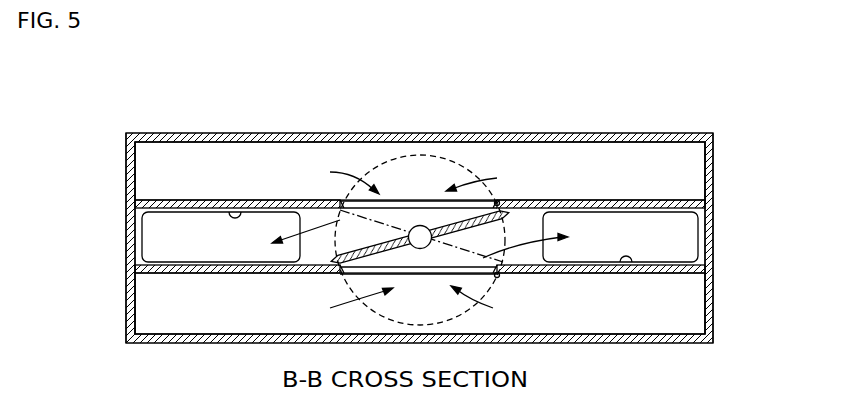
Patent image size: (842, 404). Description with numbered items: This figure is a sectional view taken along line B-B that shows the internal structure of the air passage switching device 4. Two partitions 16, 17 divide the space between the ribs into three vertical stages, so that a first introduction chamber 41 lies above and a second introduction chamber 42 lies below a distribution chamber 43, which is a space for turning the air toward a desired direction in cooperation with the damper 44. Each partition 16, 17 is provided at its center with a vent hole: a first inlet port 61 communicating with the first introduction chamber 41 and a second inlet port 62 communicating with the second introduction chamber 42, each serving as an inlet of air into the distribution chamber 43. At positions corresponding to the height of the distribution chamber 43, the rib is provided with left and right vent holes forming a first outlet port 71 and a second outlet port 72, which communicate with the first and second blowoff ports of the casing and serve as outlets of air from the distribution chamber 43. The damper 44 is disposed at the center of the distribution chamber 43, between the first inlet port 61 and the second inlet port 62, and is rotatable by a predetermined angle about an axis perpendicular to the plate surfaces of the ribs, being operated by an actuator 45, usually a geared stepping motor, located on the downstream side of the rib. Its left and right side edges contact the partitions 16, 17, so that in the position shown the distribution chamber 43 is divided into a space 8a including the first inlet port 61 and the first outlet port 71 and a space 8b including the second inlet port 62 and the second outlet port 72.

The housing 4 is at (660, 110).
The space 8a is at (118, 250).
The space 8b is at (732, 230).
The partition 16 is at (176, 200).
The partition 17 is at (183, 274).
The first introduction chamber 41 is at (692, 170).
The second introduction chamber 42 is at (693, 313).
The distribution chamber 43 is at (703, 260).
The damper 44 is at (405, 230).
The actuator 45 is at (398, 157).
The first inlet port 61 is at (498, 201).
The second inlet port 62 is at (500, 278).
The first outlet port 71 is at (226, 209).
The second outlet port 72 is at (627, 269).